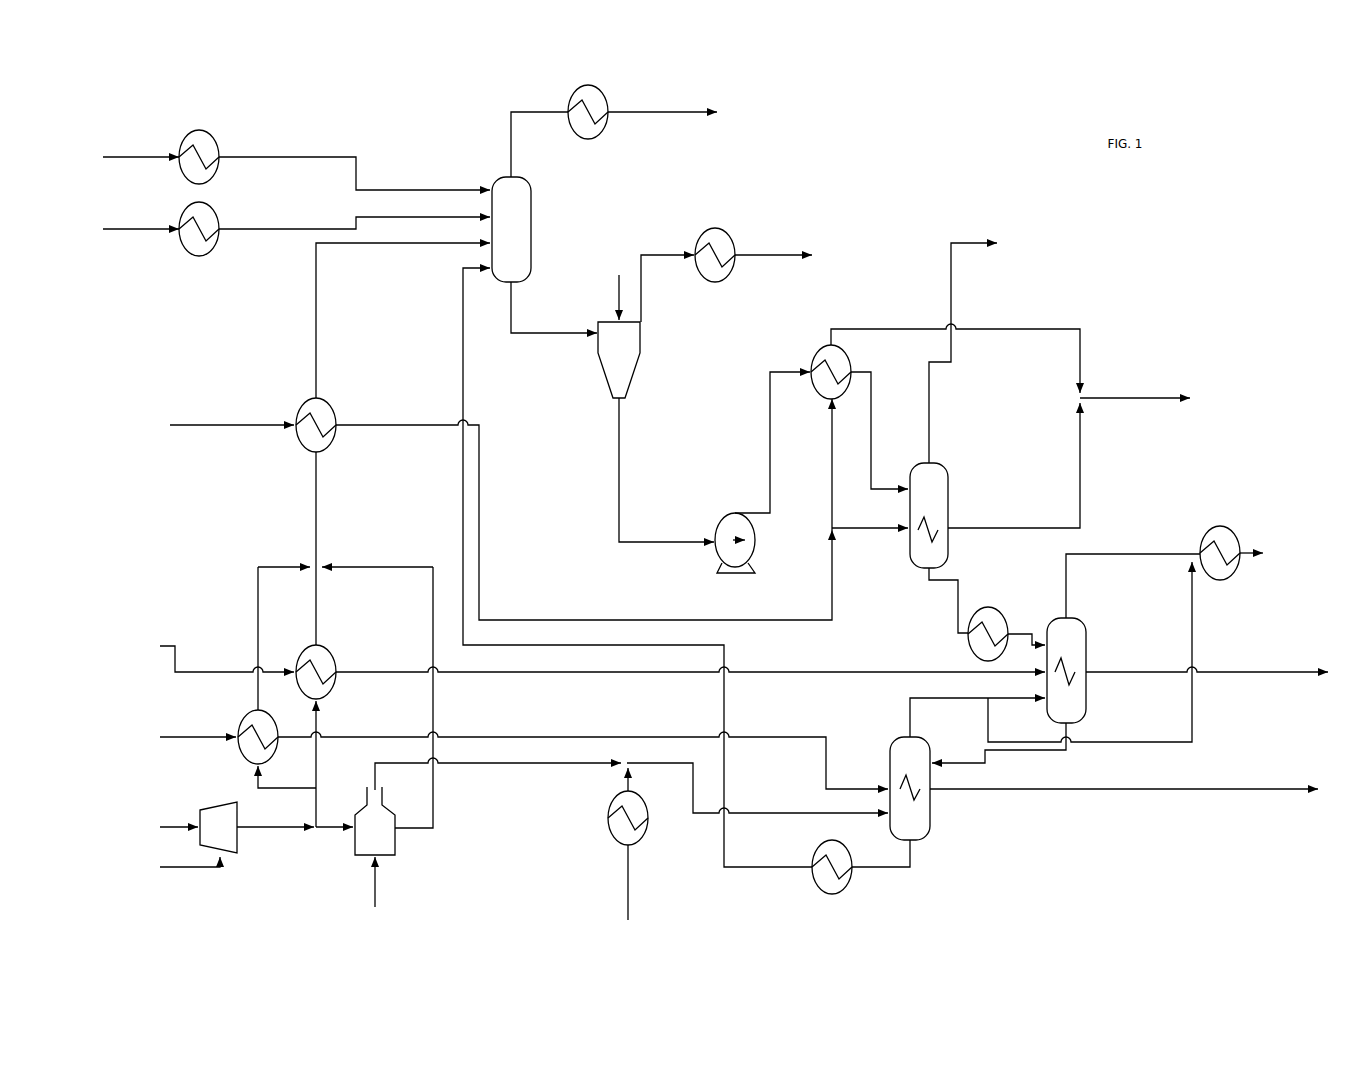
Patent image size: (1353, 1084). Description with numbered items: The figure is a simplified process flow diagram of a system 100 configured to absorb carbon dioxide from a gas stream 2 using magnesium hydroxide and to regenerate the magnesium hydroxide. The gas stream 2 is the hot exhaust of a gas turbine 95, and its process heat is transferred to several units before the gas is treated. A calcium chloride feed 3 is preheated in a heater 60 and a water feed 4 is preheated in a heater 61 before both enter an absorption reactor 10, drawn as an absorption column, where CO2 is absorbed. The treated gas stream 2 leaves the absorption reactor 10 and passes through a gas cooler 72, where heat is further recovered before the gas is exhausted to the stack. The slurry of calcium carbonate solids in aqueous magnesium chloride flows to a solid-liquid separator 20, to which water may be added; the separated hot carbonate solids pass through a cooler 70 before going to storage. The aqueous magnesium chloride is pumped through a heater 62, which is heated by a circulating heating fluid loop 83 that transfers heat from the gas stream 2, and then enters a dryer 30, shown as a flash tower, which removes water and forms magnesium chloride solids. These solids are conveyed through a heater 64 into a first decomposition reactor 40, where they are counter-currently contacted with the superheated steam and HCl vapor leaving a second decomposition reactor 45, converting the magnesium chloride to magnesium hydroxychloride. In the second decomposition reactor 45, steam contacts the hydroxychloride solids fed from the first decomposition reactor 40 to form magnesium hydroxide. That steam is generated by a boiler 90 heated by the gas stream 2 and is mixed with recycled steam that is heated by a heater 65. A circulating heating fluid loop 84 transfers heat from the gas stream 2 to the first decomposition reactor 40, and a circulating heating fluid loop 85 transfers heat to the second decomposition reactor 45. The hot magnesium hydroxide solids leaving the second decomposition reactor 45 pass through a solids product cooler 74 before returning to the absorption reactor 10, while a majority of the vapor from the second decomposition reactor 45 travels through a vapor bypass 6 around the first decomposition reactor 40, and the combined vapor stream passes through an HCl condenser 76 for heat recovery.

The system 100 is at (893, 143).
The gas stream 2 is at (668, 110).
The calcium chloride feed 3 is at (300, 158).
The water feed 4 is at (290, 229).
The vapor bypass 6 is at (1193, 627).
The absorption reactor 10 is at (546, 229).
The solid-liquid separator 20 is at (628, 432).
The dryer 30 is at (951, 435).
The first decomposition reactor 40 is at (1118, 670).
The second decomposition reactor 45 is at (955, 767).
The heater 60 is at (183, 170).
The heater 61 is at (185, 243).
The heater 62 is at (813, 384).
The heater 64 is at (986, 607).
The heater 65 is at (612, 837).
The cooler 70 is at (727, 231).
The gas cooler 72 is at (601, 130).
The solids product cooler 74 is at (815, 858).
The HCl condenser 76 is at (1240, 538).
The circulating heating fluid loop 83 is at (199, 425).
The circulating heating fluid loop 84 is at (228, 672).
The circulating heating fluid loop 85 is at (198, 737).
The boiler 90 is at (488, 845).
The gas turbine 95 is at (225, 859).